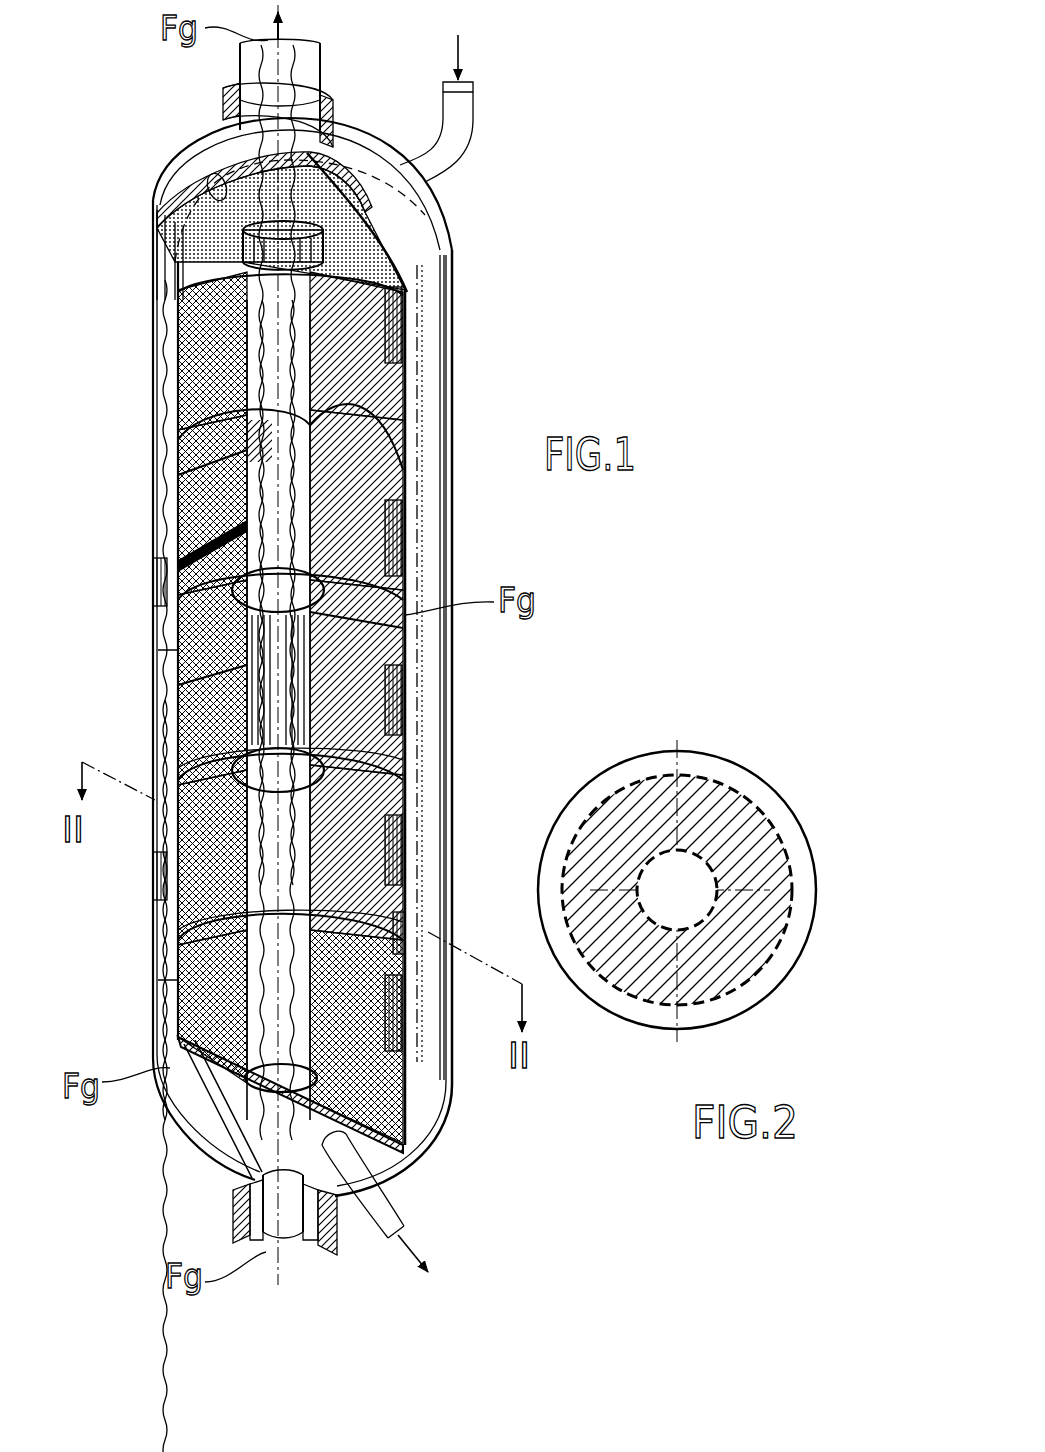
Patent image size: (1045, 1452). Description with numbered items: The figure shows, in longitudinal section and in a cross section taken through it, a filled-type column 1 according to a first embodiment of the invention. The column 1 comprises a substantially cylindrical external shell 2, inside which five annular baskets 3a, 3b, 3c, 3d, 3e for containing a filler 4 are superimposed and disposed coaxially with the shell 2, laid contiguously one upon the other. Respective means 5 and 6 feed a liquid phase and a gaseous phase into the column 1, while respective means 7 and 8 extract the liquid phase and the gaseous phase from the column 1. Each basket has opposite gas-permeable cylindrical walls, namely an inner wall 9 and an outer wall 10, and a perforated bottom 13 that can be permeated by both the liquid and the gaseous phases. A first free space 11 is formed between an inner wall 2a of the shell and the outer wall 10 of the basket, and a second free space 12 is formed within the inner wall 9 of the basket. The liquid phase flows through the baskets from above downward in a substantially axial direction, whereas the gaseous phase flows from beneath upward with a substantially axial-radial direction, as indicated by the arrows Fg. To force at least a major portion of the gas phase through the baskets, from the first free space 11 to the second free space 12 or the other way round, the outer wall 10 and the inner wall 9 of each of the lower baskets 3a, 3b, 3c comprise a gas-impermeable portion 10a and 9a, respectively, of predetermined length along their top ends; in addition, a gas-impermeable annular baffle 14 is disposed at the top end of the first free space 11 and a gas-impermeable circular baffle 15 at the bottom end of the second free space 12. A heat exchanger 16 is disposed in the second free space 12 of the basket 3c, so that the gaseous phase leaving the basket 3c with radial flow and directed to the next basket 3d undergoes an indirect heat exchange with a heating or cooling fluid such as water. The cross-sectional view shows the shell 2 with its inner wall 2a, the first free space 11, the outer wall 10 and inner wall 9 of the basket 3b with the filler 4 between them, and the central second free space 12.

In FIG. 1, the column 1 is at (562, 205).
In FIG. 1, the external shell 2 is at (152, 505).
In FIG. 2, the external shell 2 is at (709, 755).
In FIG. 1, the inner wall of the shell 2a is at (158, 870).
In FIG. 2, the inner wall of the shell 2a is at (590, 763).
In FIG. 1, the annular basket 3a is at (405, 1120).
In FIG. 1, the annular basket 3b is at (403, 896).
In FIG. 2, the annular basket 3b is at (700, 1000).
In FIG. 1, the annular basket 3c is at (403, 785).
In FIG. 1, the annular basket 3d is at (403, 560).
In FIG. 1, the annular basket 3e is at (400, 388).
In FIG. 1, the filler 4 is at (185, 280).
In FIG. 2, the filler 4 is at (703, 812).
In FIG. 1, the means for feeding a liquid phase 5 is at (478, 100).
In FIG. 1, the means for feeding a gaseous phase 6 is at (300, 1246).
In FIG. 1, the means for extracting the liquid phase 7 is at (405, 1212).
In FIG. 1, the means for extracting the gaseous phase 8 is at (308, 55).
In FIG. 1, the inner wall of the basket 9 is at (230, 520).
In FIG. 2, the inner wall of the basket 9 is at (688, 914).
In FIG. 1, the gas-impermeable portion of the inner wall 9a is at (200, 752).
In FIG. 1, the outer wall of the basket 10 is at (152, 655).
In FIG. 2, the outer wall of the basket 10 is at (640, 1010).
In FIG. 1, the gas-impermeable portion of the outer wall 10a is at (403, 320).
In FIG. 1, the first free space 11 is at (156, 300).
In FIG. 2, the first free space 11 is at (600, 998).
In FIG. 1, the second free space 12 is at (178, 462).
In FIG. 2, the second free space 12 is at (703, 927).
In FIG. 1, the perforated bottom 13 is at (395, 620).
In FIG. 1, the annular baffle 14 is at (162, 182).
In FIG. 1, the circular baffle 15 is at (240, 645).
In FIG. 1, the heat exchanger 16 is at (200, 680).